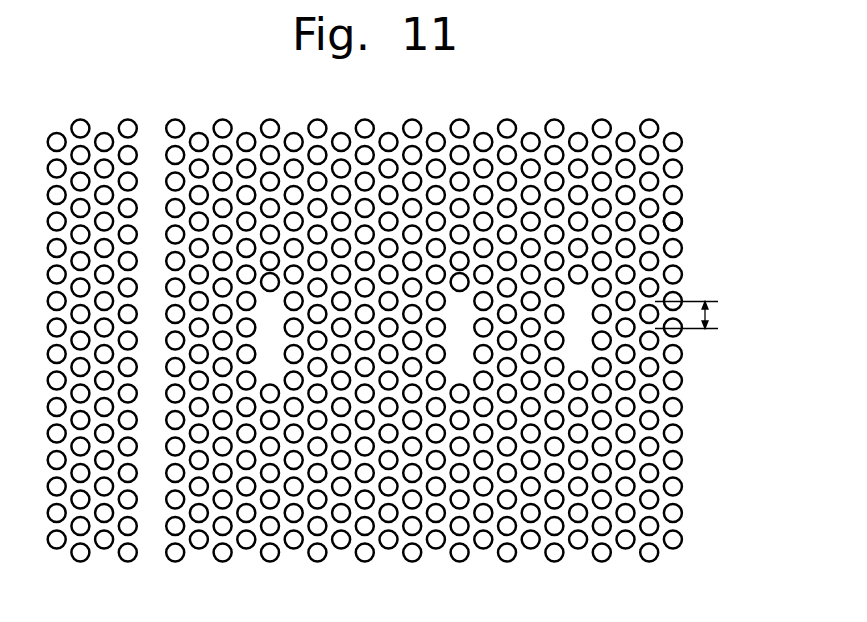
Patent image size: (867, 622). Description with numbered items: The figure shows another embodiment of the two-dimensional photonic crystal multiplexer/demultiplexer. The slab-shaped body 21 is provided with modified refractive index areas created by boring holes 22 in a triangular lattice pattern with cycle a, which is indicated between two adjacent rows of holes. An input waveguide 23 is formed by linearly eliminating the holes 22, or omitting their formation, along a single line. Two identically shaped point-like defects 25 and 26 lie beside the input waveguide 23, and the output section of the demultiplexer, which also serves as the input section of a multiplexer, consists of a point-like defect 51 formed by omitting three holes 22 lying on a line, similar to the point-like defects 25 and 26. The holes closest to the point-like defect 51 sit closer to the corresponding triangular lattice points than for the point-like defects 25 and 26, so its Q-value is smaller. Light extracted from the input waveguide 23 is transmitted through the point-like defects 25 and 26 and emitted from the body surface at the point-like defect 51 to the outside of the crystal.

The body 21 is at (642, 162).
The holes 22 is at (672, 222).
The input waveguide 23 is at (151, 149).
The point-like defect 25 is at (271, 327).
The point-like defect 26 is at (462, 328).
The point-like defect 51 is at (570, 338).
The cycle a is at (693, 314).